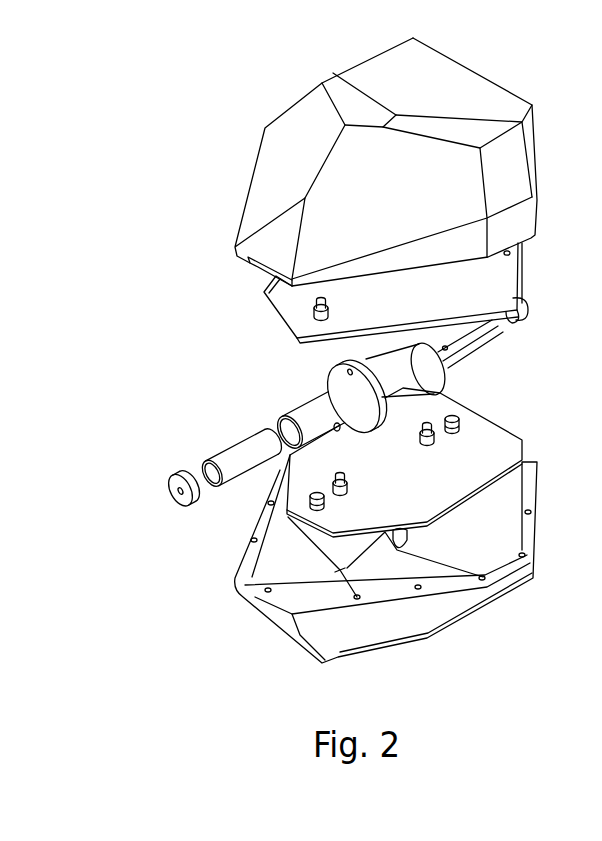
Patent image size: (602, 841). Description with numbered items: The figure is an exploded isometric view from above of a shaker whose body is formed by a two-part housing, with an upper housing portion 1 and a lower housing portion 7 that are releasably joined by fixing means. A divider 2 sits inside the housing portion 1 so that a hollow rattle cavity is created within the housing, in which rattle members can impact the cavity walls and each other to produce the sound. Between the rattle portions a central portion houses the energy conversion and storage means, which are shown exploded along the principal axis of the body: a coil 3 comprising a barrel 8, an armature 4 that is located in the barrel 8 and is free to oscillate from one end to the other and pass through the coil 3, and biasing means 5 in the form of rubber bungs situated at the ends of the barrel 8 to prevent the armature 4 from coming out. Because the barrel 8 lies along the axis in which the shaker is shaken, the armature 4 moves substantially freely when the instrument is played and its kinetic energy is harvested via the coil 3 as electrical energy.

The housing portion 1 is at (245, 147).
The divider 2 is at (263, 295).
The coil 3 is at (437, 370).
The armature 4 is at (228, 440).
The biasing means 5 is at (165, 478).
The housing portion 7 is at (243, 607).
The barrel 8 is at (298, 392).